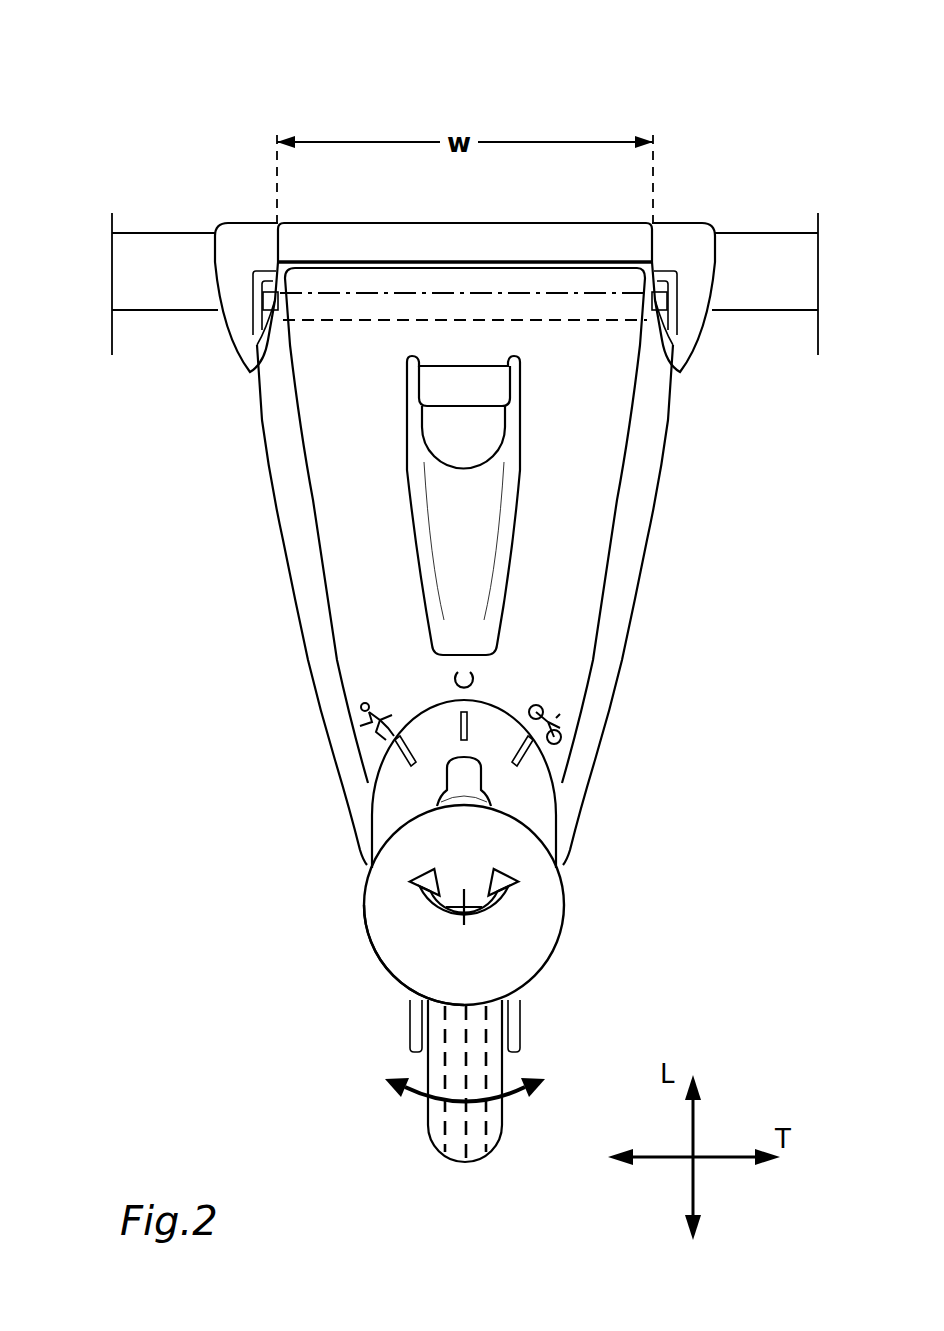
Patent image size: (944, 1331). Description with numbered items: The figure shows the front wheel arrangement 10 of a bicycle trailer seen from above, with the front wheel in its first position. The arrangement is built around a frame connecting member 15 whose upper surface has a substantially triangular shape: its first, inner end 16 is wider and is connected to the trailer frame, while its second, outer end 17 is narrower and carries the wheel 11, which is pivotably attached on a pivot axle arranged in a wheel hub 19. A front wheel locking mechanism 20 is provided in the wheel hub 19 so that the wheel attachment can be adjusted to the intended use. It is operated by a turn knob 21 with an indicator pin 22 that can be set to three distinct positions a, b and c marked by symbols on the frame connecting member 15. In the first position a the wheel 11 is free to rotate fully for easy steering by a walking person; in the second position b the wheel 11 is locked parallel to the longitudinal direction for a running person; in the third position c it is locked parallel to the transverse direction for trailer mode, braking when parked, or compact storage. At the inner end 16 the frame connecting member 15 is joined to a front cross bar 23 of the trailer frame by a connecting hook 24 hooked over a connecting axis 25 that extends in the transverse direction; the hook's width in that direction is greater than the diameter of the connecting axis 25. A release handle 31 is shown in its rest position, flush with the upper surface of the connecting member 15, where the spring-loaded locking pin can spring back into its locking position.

The front wheel arrangement 10 is at (509, 83).
The wheel 11 is at (437, 1125).
The frame connecting member 15 is at (580, 522).
The inner end 16 is at (692, 157).
The outer end 17 is at (340, 883).
The wheel hub 19 is at (540, 902).
The front wheel locking mechanism 20 is at (527, 950).
The turn knob 21 is at (400, 962).
The indicator pin 22 is at (478, 785).
The front cross bar 23 is at (757, 258).
The connecting hook 24 is at (520, 290).
The connecting axis 25 is at (380, 290).
The release handle 31 is at (448, 510).
The first position a is at (473, 682).
The second position b is at (378, 728).
The third position c is at (548, 710).